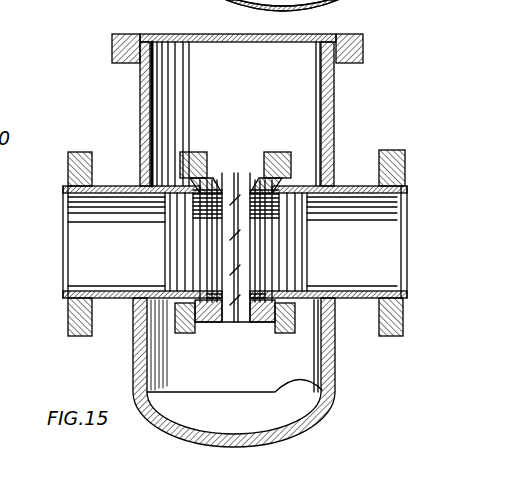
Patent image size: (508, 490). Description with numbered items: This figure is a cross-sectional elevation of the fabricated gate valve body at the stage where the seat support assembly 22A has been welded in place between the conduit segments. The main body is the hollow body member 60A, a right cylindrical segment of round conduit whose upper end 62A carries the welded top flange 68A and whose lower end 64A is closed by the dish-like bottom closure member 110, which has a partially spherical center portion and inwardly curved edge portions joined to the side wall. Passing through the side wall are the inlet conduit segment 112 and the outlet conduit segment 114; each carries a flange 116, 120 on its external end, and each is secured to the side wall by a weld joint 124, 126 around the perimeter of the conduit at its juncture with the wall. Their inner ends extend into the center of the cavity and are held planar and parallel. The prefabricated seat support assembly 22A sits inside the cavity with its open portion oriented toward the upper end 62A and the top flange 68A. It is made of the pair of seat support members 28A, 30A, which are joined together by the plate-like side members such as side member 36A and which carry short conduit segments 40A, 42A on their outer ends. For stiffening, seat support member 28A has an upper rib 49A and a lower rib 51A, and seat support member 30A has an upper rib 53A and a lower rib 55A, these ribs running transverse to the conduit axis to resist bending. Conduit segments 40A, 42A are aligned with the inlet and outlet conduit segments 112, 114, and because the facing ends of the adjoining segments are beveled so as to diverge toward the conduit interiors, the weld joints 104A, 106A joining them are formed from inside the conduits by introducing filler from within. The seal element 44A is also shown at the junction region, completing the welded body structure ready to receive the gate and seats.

The upper end of hollow body member 62A is at (200, 42).
The hollow body member 60A is at (240, 75).
The top flange 68A is at (363, 50).
The weld joint 104A is at (140, 172).
The upper rib 49A is at (170, 150).
The seat support assembly 22A is at (264, 110).
The seat support member 28A is at (216, 173).
The seat support member 30A is at (256, 173).
The upper rib 53A is at (291, 163).
The flange 120 is at (397, 149).
The inlet conduit segment 112 is at (130, 250).
The outlet conduit segment 114 is at (374, 246).
The seal 44A is at (203, 253).
The weld joint 106A is at (294, 246).
The flange 116 is at (76, 337).
The weld joint 124 is at (133, 300).
The conduit segment 40A is at (178, 301).
The lower rib 51A is at (197, 325).
The side member 36A is at (228, 322).
The lower rib 55A is at (275, 323).
The conduit segment 42A is at (297, 301).
The weld joint 126 is at (334, 303).
The lower end of hollow body member 64A is at (324, 392).
The bottom closure member 110 is at (313, 422).